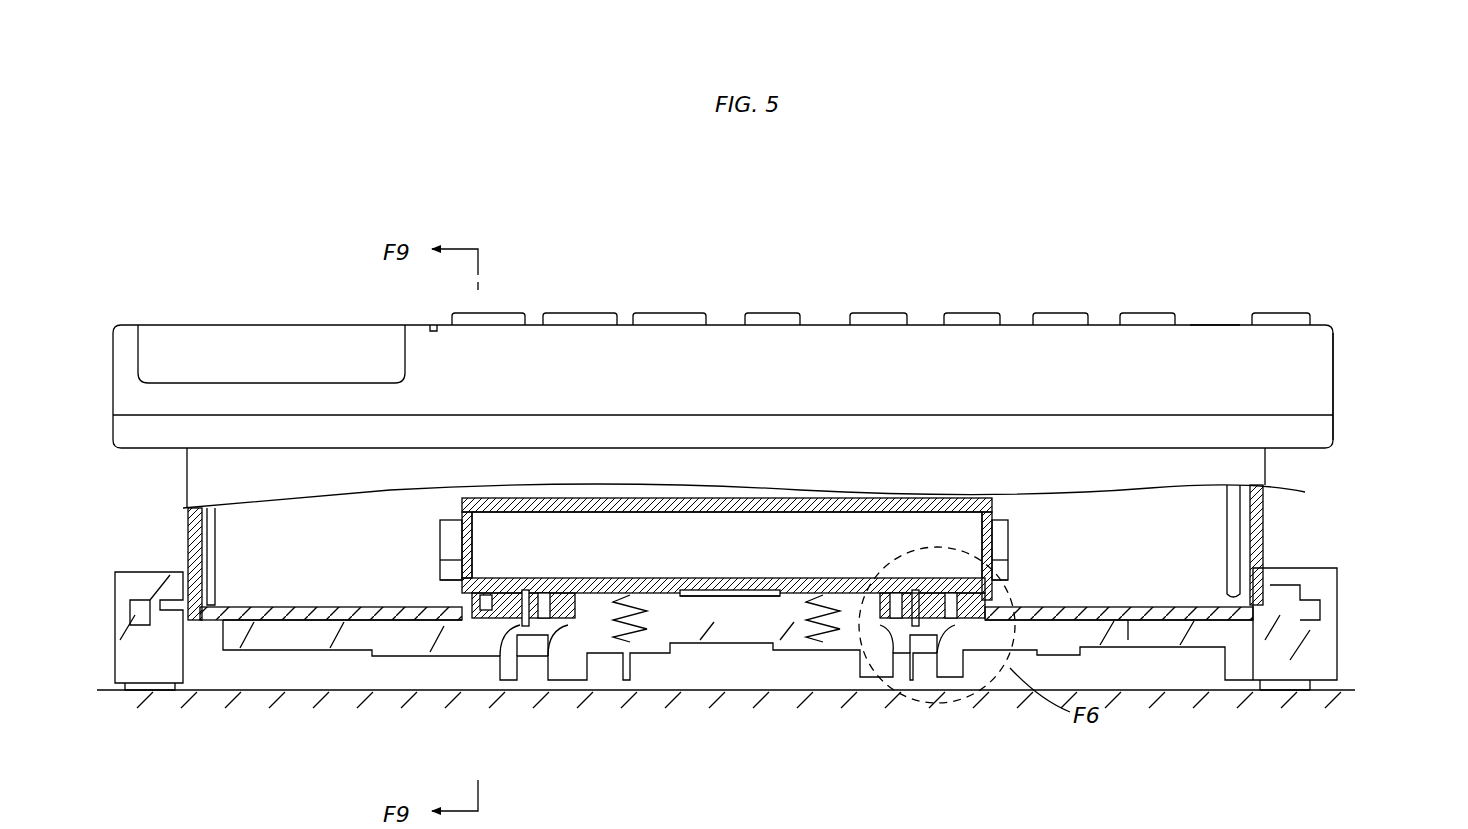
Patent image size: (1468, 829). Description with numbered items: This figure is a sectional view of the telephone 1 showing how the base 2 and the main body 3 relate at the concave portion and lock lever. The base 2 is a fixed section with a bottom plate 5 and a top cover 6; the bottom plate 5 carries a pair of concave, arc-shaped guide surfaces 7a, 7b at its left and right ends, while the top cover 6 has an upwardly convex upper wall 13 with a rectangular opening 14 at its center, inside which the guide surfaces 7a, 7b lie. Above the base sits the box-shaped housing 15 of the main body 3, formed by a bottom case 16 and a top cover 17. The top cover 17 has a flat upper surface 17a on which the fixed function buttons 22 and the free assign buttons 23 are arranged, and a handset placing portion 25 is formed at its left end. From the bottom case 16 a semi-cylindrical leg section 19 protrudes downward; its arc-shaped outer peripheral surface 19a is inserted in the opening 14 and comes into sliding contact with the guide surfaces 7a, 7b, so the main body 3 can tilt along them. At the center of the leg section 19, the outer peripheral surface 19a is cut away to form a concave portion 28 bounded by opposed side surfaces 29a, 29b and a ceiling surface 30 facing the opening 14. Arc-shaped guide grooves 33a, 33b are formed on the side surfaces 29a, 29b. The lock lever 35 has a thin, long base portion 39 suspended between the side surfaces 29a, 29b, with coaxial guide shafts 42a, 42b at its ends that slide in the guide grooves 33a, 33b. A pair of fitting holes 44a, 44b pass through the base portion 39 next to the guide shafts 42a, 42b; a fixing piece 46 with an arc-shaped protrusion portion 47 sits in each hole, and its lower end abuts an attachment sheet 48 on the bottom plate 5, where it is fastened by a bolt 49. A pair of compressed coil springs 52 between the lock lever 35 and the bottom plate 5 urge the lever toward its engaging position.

The telephone 1 is at (1308, 236).
The base 2 is at (1348, 622).
The main body 3 is at (153, 310).
The bottom plate 5 is at (412, 652).
The top cover 6 is at (1340, 578).
The guide surface 7a is at (290, 622).
The guide surface 7b is at (1170, 622).
The upper wall 13 is at (128, 572).
The opening 14 is at (190, 575).
The housing 15 is at (1405, 365).
The bottom case 16 is at (1328, 433).
The top cover 17 is at (1328, 375).
The upper surface 17a is at (1210, 325).
The leg section 19 is at (1265, 520).
The outer peripheral surface 19a is at (1128, 612).
The fixed function buttons 22 is at (643, 313).
The free assign buttons 23 is at (945, 313).
The handset placing portion 25 is at (243, 325).
The concave portion 28 is at (760, 505).
The side surface 29a is at (460, 533).
The side surface 29b is at (995, 520).
The ceiling surface 30 is at (615, 512).
The guide groove 33a is at (460, 598).
The guide groove 33b is at (995, 598).
The lock lever 35 is at (855, 571).
The base portion 39 is at (709, 578).
The guide shaft 42a is at (460, 575).
The guide shaft 42b is at (995, 560).
The fitting hole 44a is at (552, 593).
The fitting hole 44b is at (898, 593).
The fixing piece 46 is at (498, 635).
The protrusion portion 47 is at (520, 593).
The attachment sheet 48 is at (562, 640).
The bolt 49 is at (530, 640).
The compressed coil spring 52 is at (635, 645).